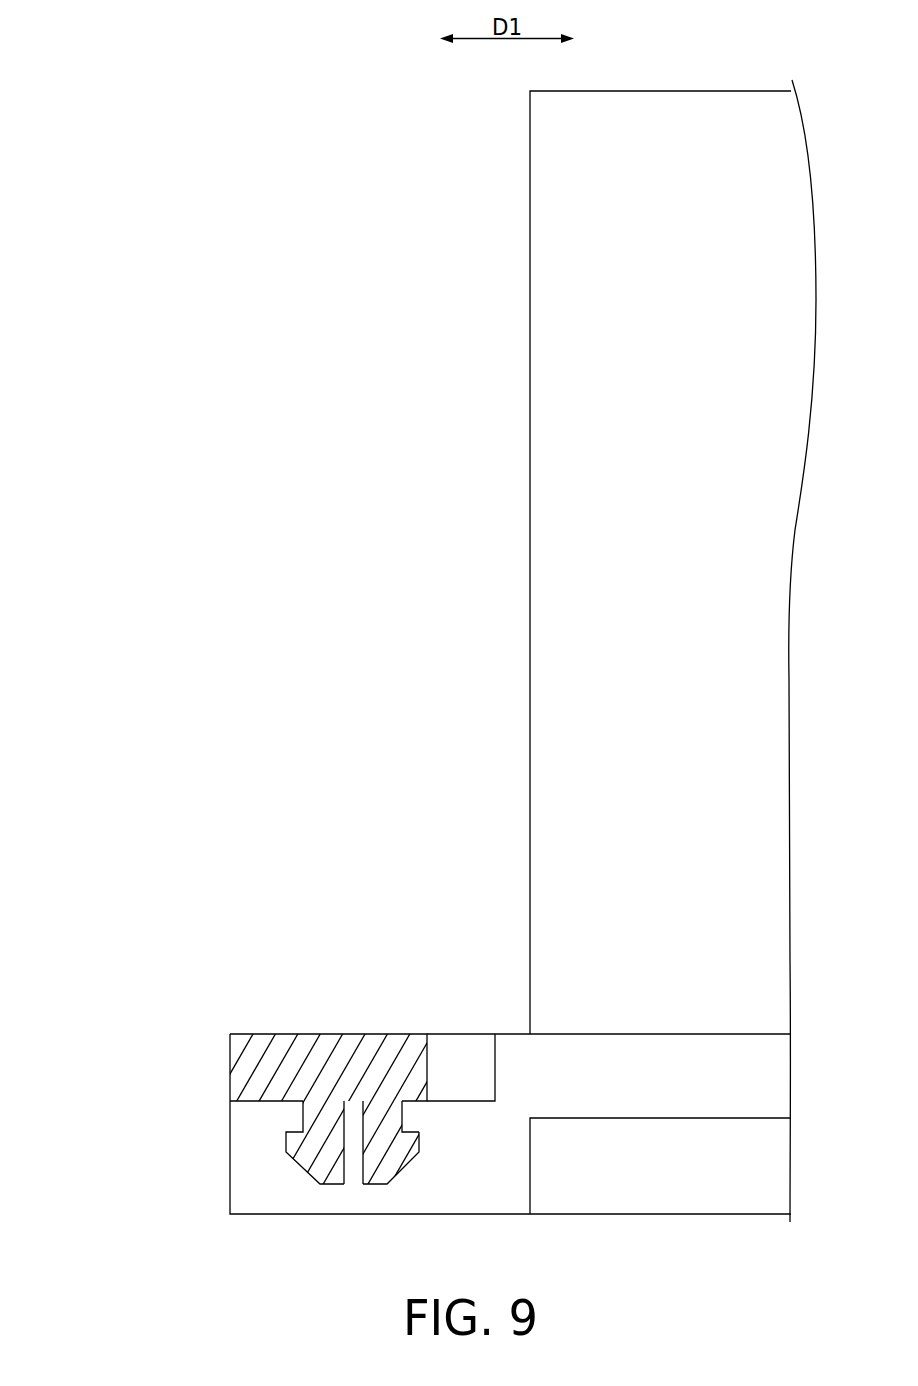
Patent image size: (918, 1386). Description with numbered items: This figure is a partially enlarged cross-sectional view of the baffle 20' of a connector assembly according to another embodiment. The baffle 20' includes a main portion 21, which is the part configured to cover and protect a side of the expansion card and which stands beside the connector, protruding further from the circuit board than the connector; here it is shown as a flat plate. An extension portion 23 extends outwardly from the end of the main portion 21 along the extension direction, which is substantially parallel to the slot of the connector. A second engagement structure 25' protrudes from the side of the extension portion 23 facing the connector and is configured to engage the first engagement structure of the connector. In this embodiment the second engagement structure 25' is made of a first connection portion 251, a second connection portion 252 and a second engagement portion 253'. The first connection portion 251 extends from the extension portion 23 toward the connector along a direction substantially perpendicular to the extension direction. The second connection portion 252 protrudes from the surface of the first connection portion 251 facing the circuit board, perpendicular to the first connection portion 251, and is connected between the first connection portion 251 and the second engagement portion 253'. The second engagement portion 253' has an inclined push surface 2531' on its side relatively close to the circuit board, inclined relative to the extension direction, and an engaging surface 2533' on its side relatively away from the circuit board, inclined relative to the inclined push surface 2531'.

The baffle 20' is at (435, 654).
The main portion 21 is at (600, 339).
The extension portion 23 is at (230, 1188).
The second engagement structure 25' is at (275, 1132).
The first connection portion 251 is at (305, 1028).
The second engagement portion 253' is at (302, 1132).
The second connection portion 252 is at (373, 1119).
The inclined push surface 2531' is at (409, 1202).
The engaging surface 2533' is at (448, 1054).